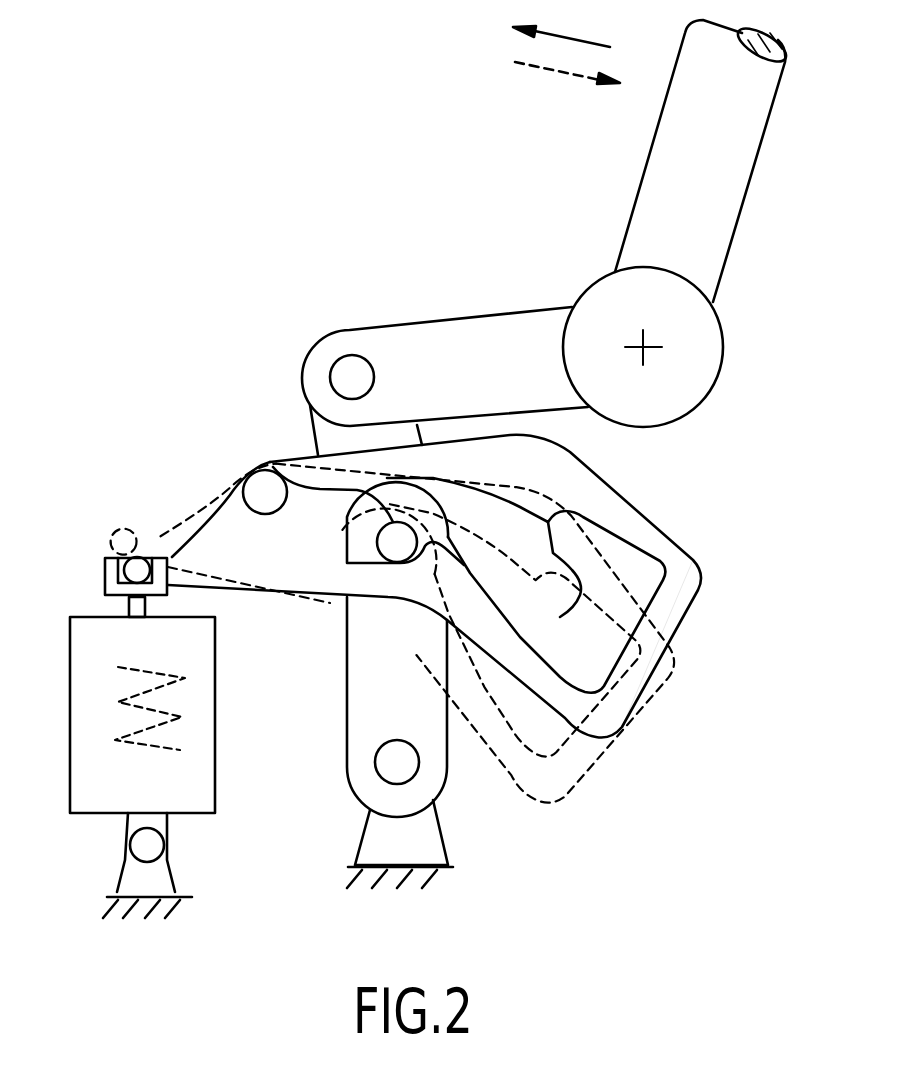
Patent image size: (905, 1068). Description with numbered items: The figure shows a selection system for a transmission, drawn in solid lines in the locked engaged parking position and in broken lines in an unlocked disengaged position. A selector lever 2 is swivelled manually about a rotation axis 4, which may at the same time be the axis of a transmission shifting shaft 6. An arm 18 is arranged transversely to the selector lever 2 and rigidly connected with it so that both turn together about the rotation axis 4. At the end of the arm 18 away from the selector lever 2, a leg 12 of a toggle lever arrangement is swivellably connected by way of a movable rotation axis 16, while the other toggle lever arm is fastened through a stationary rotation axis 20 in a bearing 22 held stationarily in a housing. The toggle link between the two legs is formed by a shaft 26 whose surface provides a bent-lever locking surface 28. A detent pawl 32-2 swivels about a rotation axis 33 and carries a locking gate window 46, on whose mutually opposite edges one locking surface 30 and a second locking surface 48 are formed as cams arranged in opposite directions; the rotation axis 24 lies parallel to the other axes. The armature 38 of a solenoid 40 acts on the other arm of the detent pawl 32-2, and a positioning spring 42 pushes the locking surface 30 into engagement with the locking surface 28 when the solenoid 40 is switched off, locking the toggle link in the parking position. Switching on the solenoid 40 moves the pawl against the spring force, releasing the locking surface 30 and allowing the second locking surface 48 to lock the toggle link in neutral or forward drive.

The selector lever 2 is at (660, 160).
The rotation axis 4 is at (648, 340).
The transmission shifting shaft 6 is at (718, 377).
The leg 12 is at (310, 425).
The movable rotation axis 16 is at (348, 378).
The arm 18 is at (473, 316).
The stationary rotation axis 20 is at (385, 755).
The bearing 22 is at (363, 833).
The rotation axis 24 is at (395, 540).
The shaft 26 is at (277, 467).
The bent-lever locking surface 28 is at (390, 533).
The locking surface 30 is at (360, 545).
The detent pawl 32-2 is at (652, 517).
The rotation axis 33 is at (252, 493).
The armature 38 is at (128, 610).
The solenoid 40 is at (217, 702).
The positioning spring 42 is at (180, 750).
The locking gate window 46 is at (648, 583).
The second locking surface 48 is at (573, 607).